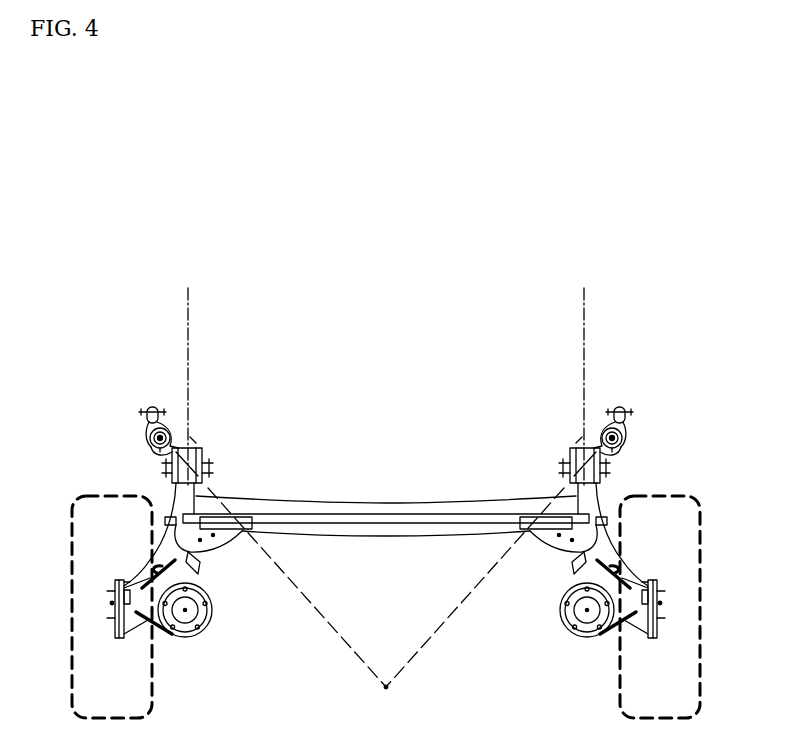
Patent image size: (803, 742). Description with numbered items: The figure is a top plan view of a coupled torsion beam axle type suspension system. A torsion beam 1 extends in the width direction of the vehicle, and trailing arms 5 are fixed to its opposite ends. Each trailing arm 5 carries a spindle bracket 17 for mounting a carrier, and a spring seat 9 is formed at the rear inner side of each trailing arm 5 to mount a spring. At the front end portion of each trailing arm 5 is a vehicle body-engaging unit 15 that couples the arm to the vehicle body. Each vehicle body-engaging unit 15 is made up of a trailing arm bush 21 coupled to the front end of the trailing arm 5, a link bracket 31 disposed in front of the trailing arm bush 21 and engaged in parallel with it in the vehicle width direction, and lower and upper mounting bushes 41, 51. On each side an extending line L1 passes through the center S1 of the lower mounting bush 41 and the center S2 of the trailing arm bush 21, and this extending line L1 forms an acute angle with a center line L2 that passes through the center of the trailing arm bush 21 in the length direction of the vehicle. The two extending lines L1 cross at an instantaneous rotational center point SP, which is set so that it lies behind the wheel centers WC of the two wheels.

The torsion beam 1 is at (385, 538).
The trailing arm 5 is at (199, 562).
The spring seat 9 is at (205, 619).
The vehicle body-engaging unit 15 is at (133, 419).
The spindle bracket 17 is at (118, 630).
The trailing arm bush 21 is at (205, 460).
The link bracket 31 is at (152, 461).
The lower mounting bush 41 is at (150, 436).
The upper mounting bush 51 is at (153, 406).
The center of lower mounting bush S1 is at (165, 452).
The center of trailing arm bush S2 is at (212, 473).
The extending line L1 is at (335, 632).
The center line L2 is at (192, 302).
The instantaneous rotational center point SP is at (400, 688).
The wheel center WC is at (100, 601).